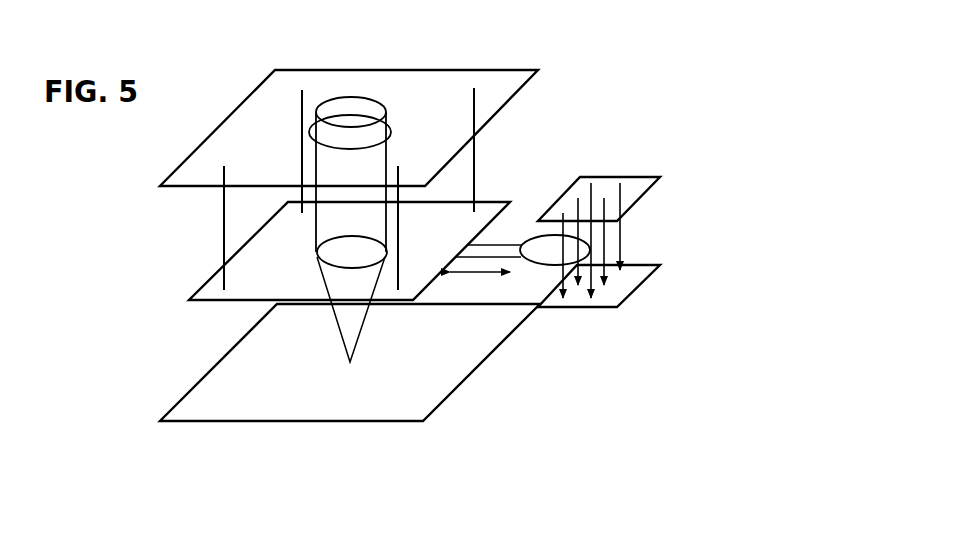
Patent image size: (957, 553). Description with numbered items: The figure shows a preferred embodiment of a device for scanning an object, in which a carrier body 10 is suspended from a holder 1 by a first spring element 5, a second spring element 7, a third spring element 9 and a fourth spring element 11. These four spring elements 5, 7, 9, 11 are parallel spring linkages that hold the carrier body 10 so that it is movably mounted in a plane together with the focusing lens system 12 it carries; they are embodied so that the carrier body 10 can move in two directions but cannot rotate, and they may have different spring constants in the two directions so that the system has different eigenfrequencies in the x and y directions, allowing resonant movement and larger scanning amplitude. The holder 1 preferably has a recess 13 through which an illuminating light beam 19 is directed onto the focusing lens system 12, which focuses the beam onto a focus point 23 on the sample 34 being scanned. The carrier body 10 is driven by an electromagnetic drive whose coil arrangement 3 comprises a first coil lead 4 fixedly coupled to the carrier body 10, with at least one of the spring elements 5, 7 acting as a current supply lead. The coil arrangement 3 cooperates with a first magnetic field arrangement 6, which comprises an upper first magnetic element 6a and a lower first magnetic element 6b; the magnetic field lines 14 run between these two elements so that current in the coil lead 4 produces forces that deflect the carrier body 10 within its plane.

The holder 1 is at (501, 107).
The carrier body 10 is at (218, 302).
The sample 34 is at (493, 348).
The fourth spring element 11 is at (302, 110).
The third spring element 9 is at (474, 157).
The first spring element 5 is at (224, 232).
The second spring element 7 is at (398, 247).
The recess 13 is at (390, 128).
The illuminating light beam 19 is at (385, 158).
The focusing lens system 12 is at (345, 255).
The focus point 23 is at (350, 363).
The first coil lead 4 is at (545, 265).
The coil arrangement 3 is at (527, 225).
The upper first magnetic element 6a is at (642, 197).
The lower first magnetic element 6b is at (640, 285).
The magnetic field lines 14 is at (630, 232).
The first magnetic field arrangement 6 is at (735, 232).